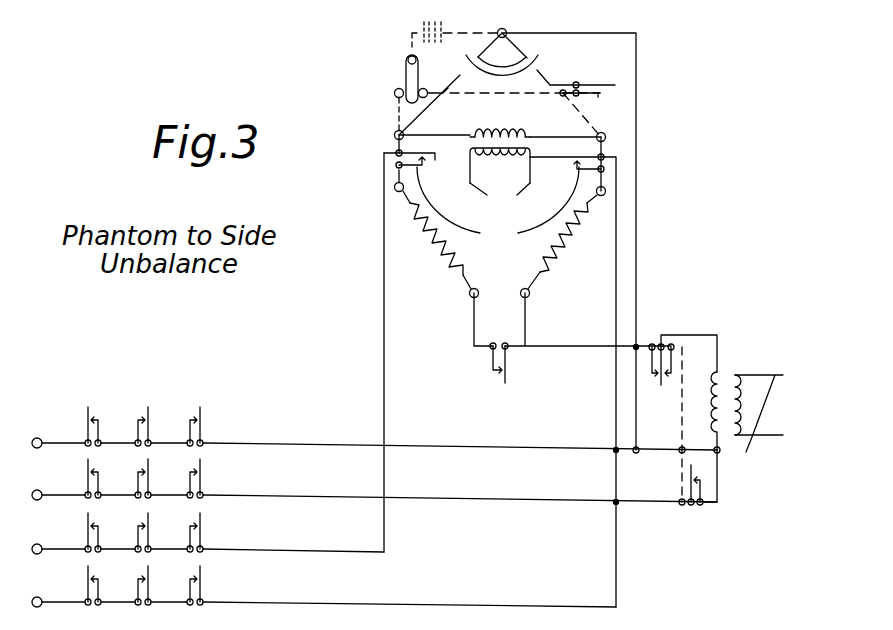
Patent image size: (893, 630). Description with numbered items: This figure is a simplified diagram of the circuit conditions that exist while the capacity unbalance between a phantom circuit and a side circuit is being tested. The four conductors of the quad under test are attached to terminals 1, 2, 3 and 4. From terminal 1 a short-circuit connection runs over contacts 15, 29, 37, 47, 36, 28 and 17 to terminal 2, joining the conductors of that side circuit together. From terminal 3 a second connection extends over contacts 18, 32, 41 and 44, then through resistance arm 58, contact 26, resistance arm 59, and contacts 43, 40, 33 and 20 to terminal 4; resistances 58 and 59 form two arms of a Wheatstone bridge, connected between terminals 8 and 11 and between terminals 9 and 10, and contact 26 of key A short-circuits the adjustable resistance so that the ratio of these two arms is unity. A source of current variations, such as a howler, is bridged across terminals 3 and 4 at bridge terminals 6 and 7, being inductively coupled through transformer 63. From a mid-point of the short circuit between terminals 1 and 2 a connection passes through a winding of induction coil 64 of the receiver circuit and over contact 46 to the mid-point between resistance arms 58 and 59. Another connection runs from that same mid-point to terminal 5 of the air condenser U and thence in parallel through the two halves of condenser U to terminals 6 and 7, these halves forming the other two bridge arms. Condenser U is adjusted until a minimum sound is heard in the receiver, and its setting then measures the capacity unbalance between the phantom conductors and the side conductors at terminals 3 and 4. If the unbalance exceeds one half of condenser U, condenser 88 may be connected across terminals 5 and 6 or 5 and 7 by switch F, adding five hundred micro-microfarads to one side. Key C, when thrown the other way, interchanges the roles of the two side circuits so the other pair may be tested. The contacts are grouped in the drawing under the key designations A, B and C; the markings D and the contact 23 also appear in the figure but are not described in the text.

The terminal 5 is at (504, 19).
The condenser 88 is at (420, 28).
The switch F is at (405, 70).
The key A is at (336, 235).
The relay B contacts B is at (146, 388).
The key C is at (198, 388).
The relay D / source D is at (551, 366).
The air condenser U is at (500, 75).
The contact 23 is at (598, 97).
The terminal 6 is at (390, 138).
The terminal 7 is at (606, 137).
The terminal 8 is at (394, 188).
The terminal 9 is at (592, 192).
The terminal 10 is at (530, 293).
The terminal 11 is at (469, 293).
The transformer 63 is at (530, 143).
The contact 43 is at (537, 163).
The contact 44 is at (436, 160).
The resistance 58 is at (432, 248).
The resistance 59 is at (559, 246).
The contact 26 is at (490, 368).
The contact 46 is at (660, 375).
The contact 47 is at (704, 484).
The induction coil 64 is at (722, 374).
The terminal 1 is at (35, 431).
The terminal 2 is at (35, 483).
The terminal 3 is at (35, 537).
The terminal 4 is at (35, 590).
The contact 15 is at (87, 425).
The contact 29 is at (138, 425).
The contact 37 is at (190, 425).
The contact 17 is at (87, 477).
The contact 28 is at (138, 477).
The contact 36 is at (190, 477).
The contact 18 is at (87, 531).
The contact 32 is at (138, 531).
The contact 41 is at (190, 531).
The contact 20 is at (87, 584).
The contact 33 is at (138, 584).
The contact 40 is at (190, 584).